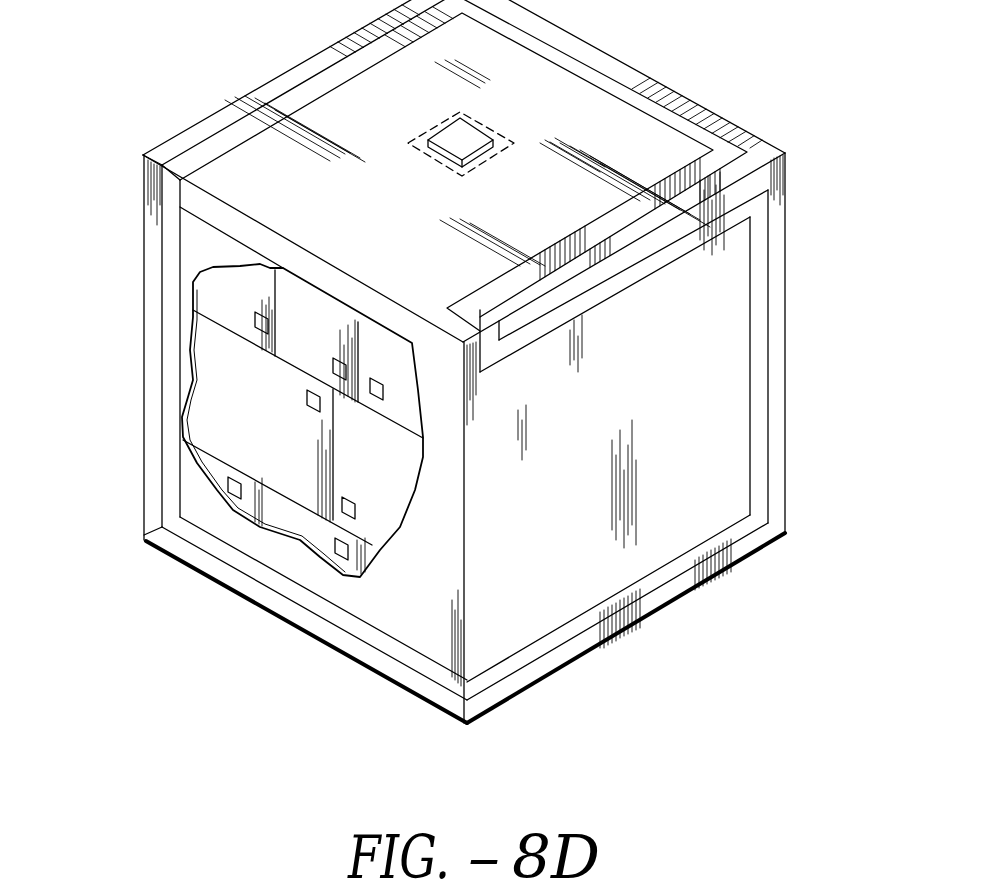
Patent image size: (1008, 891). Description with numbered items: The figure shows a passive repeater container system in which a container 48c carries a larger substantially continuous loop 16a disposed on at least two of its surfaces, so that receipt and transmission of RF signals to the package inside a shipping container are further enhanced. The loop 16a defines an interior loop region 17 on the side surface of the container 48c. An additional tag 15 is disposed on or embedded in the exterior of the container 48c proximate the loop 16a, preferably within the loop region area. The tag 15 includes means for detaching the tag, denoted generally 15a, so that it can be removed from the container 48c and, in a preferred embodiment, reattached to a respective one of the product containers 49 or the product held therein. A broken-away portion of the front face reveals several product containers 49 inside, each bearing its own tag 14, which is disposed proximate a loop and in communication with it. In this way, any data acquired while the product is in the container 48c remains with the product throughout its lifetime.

The tag 14 is at (256, 318).
The additional tag 15 is at (446, 134).
The means for detaching the tag 15a is at (488, 128).
The substantially continuous loop 16a is at (757, 294).
The loop region 17 is at (659, 446).
The container 48c is at (150, 503).
The product container 49 is at (214, 300).